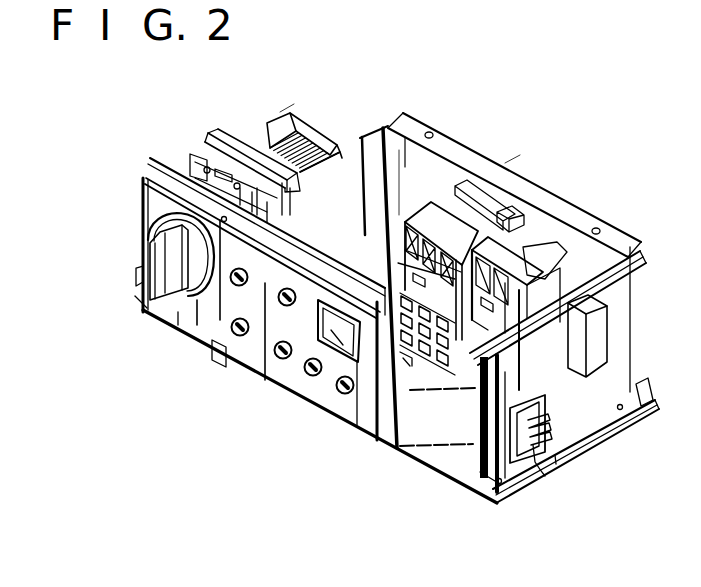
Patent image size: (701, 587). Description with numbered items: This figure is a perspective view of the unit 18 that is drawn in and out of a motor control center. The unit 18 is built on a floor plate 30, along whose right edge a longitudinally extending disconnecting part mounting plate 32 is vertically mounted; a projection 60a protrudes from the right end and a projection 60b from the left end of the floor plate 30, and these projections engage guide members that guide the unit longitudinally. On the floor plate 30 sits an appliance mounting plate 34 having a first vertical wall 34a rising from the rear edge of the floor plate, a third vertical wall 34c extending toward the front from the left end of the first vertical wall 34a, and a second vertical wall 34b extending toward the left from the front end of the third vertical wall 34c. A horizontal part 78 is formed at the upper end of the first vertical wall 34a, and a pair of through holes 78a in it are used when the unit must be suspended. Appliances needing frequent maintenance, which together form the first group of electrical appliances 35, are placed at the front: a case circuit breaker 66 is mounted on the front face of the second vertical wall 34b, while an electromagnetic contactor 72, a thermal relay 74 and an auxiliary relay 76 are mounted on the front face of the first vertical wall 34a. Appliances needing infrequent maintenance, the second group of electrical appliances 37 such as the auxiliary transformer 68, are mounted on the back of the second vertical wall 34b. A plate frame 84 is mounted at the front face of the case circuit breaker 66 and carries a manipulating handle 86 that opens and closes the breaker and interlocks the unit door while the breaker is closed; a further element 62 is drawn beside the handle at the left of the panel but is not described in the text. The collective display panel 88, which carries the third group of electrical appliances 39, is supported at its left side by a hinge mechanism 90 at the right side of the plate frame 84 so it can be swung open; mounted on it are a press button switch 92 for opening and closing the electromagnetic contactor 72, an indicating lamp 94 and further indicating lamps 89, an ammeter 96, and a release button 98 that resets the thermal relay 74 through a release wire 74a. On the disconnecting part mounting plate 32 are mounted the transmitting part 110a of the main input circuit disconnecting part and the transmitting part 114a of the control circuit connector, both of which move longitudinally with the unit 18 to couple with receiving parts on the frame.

The unit 18 is at (553, 97).
The floor plate 30 is at (414, 452).
The disconnecting part mounting plate 32 is at (618, 343).
The appliance mounting plate 34 is at (431, 120).
The first vertical wall 34a is at (429, 197).
The second vertical wall 34b is at (225, 129).
The third vertical wall 34c is at (348, 217).
The first group of electrical appliances 35 is at (512, 161).
The second group of electrical appliances 37 is at (282, 107).
The third group of electrical appliances 39 is at (253, 380).
The projection 60a is at (513, 497).
The projection 60b is at (140, 290).
The handle 62 is at (143, 276).
The case circuit breaker 66 is at (203, 152).
The auxiliary transformer 68 is at (299, 120).
The electromagnetic contactor 72 is at (502, 198).
The thermal relay 74 is at (427, 358).
The release wire 74a is at (418, 370).
The auxiliary relay 76 is at (543, 206).
The horizontal part 78 is at (640, 250).
The through holes 78a is at (434, 133).
The plate frame 84 is at (183, 320).
The manipulating handle 86 is at (142, 307).
The collective display panel 88 is at (357, 425).
The indicating lamps 89 is at (304, 383).
The hinge mechanism 90 is at (170, 213).
The press button switch 92 is at (266, 378).
The indicating lamp 94 is at (236, 335).
The ammeter 96 is at (305, 368).
The release button 98 is at (290, 306).
The transmitting part 110a is at (545, 476).
The transmitting part 114a is at (613, 316).